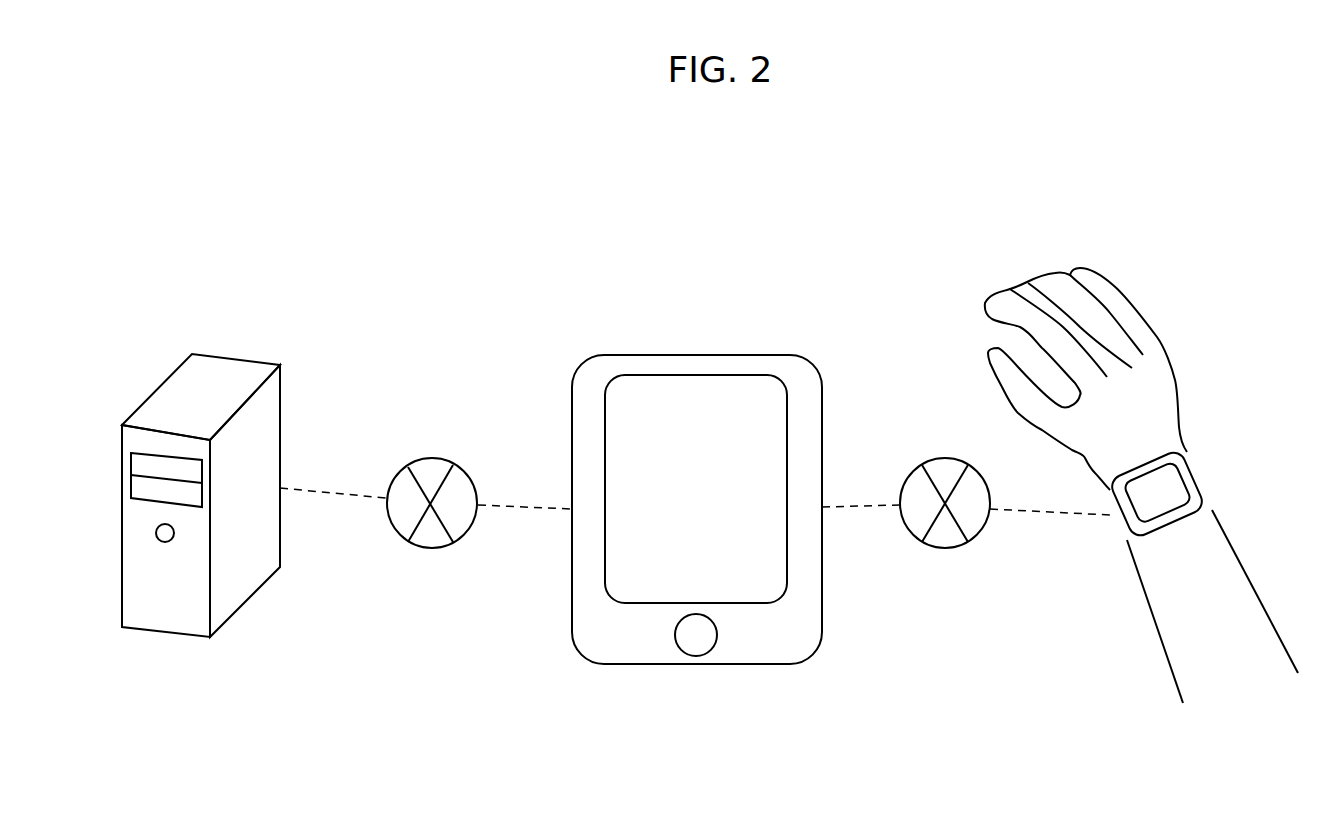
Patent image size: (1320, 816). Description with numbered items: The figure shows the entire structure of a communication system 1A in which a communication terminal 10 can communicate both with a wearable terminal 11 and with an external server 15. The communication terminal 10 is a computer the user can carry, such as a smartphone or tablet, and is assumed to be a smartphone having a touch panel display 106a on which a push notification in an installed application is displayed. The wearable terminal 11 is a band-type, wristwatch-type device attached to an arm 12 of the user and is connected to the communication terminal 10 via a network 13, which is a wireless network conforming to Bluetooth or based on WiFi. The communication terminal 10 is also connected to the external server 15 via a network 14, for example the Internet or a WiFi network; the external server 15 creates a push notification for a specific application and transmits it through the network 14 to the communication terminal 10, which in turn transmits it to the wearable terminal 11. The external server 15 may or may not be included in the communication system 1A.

The communication system 1A is at (1207, 218).
The communication terminal 10 is at (754, 666).
The touch panel display 106a is at (674, 373).
The wearable terminal 11 is at (1212, 488).
The arm 12 is at (1178, 380).
The network 13 is at (957, 548).
The network 14 is at (445, 548).
The external server 15 is at (198, 640).